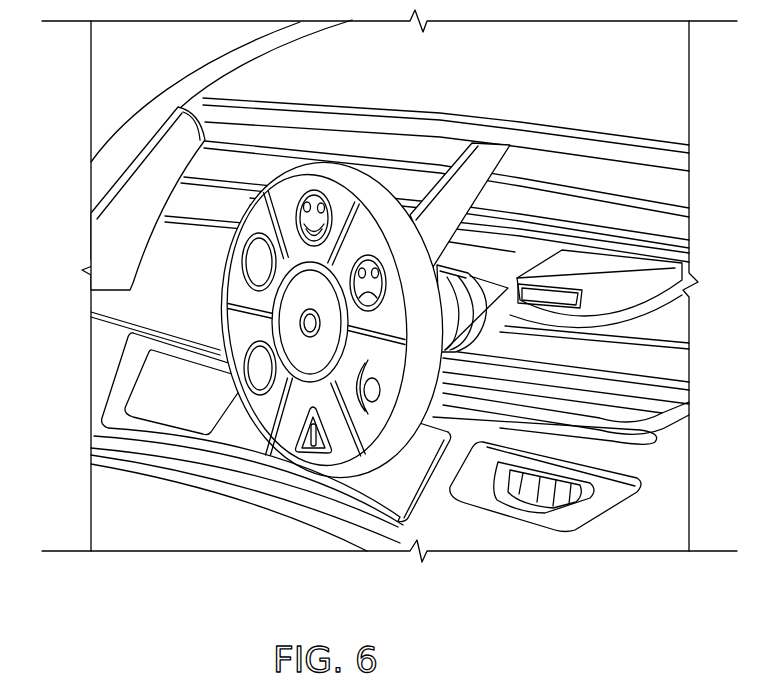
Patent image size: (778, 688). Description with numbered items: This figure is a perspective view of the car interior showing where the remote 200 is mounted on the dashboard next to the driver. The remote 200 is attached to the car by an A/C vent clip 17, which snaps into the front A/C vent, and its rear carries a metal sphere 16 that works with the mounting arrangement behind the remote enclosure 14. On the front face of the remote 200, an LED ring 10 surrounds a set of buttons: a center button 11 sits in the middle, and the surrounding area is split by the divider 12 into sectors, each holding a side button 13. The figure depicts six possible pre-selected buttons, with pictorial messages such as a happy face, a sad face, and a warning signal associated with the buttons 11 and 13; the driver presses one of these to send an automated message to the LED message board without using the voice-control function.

The remote 200 is at (178, 242).
The LED ring 10 is at (222, 350).
The center button 11 is at (289, 313).
The divider 12 is at (338, 232).
The side button 13 is at (263, 413).
The remote enclosure 14 is at (413, 257).
The metal sphere 16 is at (450, 327).
The A/C vent clip 17 is at (545, 300).